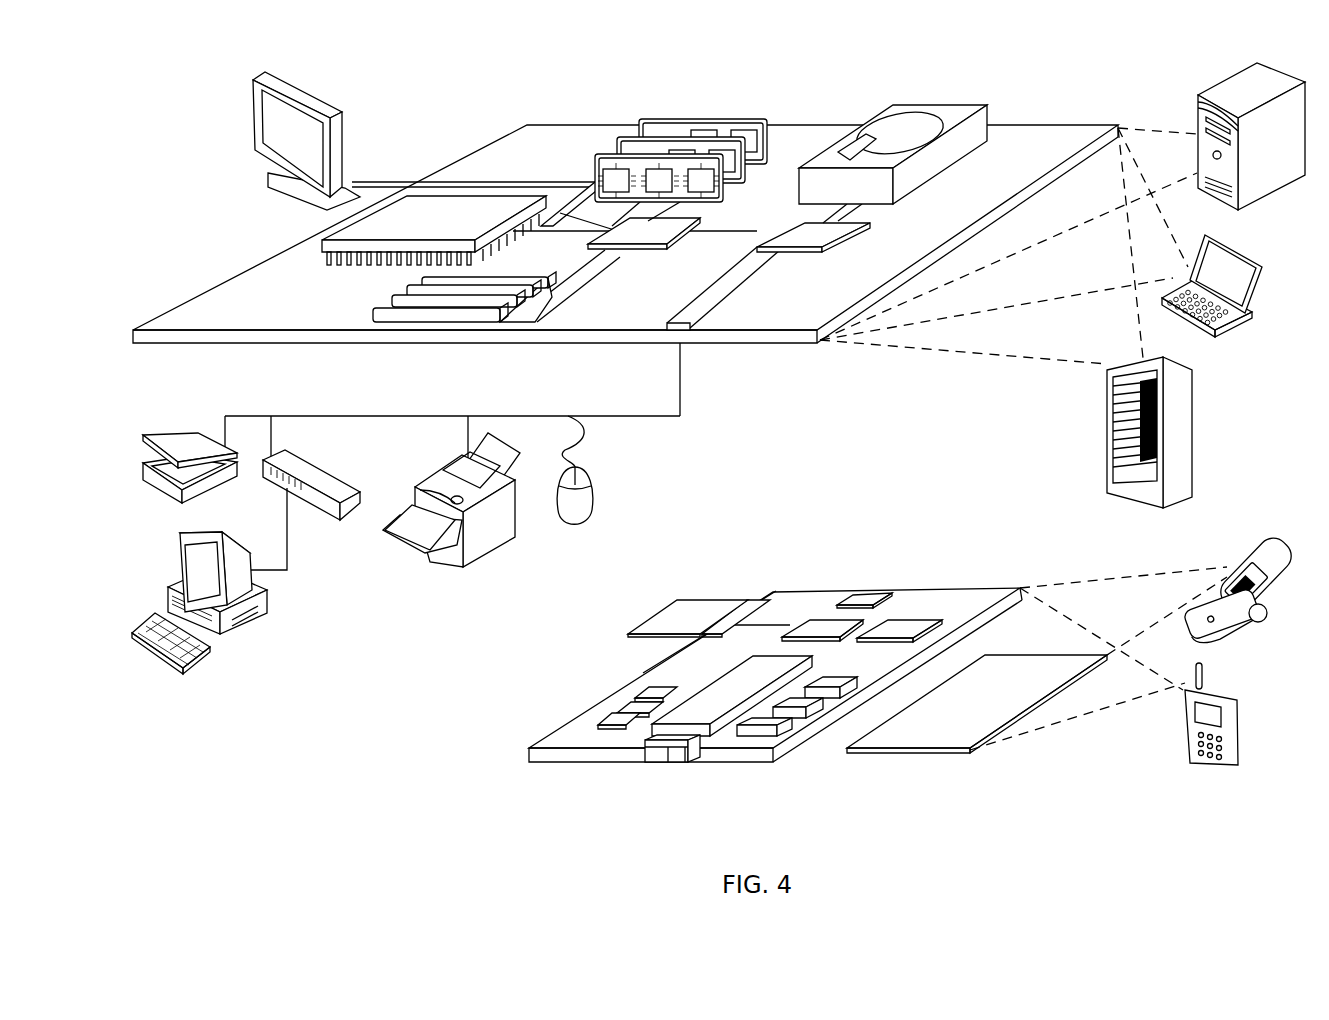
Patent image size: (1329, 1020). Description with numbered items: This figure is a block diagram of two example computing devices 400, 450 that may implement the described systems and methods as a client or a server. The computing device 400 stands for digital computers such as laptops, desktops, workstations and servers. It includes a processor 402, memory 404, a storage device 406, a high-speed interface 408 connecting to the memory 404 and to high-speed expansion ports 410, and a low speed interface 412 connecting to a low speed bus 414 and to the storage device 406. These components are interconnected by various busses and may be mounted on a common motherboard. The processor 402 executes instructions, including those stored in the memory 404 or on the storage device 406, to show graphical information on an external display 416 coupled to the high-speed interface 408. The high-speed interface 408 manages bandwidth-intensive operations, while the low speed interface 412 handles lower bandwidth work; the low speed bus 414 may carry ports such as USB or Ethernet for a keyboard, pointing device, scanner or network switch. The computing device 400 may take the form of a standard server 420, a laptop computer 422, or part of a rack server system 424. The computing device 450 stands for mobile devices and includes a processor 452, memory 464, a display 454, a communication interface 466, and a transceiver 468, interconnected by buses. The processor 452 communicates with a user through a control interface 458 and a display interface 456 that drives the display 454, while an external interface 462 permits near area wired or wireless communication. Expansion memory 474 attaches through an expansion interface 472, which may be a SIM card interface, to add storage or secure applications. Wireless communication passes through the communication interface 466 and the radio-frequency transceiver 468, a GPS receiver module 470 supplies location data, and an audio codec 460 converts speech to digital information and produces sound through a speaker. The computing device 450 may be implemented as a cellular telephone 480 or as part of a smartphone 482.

The computing device 400 is at (448, 96).
The processor 402 is at (322, 247).
The memory 404 is at (648, 118).
The storage device 406 is at (888, 123).
The high-speed interface 408 is at (573, 193).
The high-speed expansion ports 410 is at (373, 303).
The low speed interface 412 is at (793, 232).
The low speed bus 414 is at (693, 332).
The display 416 is at (251, 78).
The standard server 420 is at (1198, 112).
The laptop computer 422 is at (1262, 265).
The rack server system 424 is at (1107, 455).
The computing device 450 is at (503, 760).
The processor 452 is at (704, 716).
The display 454 is at (940, 737).
The display interface 456 is at (778, 735).
The control interface 458 is at (803, 702).
The audio codec 460 is at (833, 682).
The external interface 462 is at (670, 753).
The memory 464 is at (606, 712).
The communication interface 466 is at (818, 625).
The transceiver 468 is at (898, 623).
The GPS receiver module 470 is at (866, 594).
The expansion interface 472 is at (738, 600).
The expansion memory 474 is at (670, 600).
The cellular telephone 480 is at (1250, 545).
The smartphone 482 is at (1185, 720).